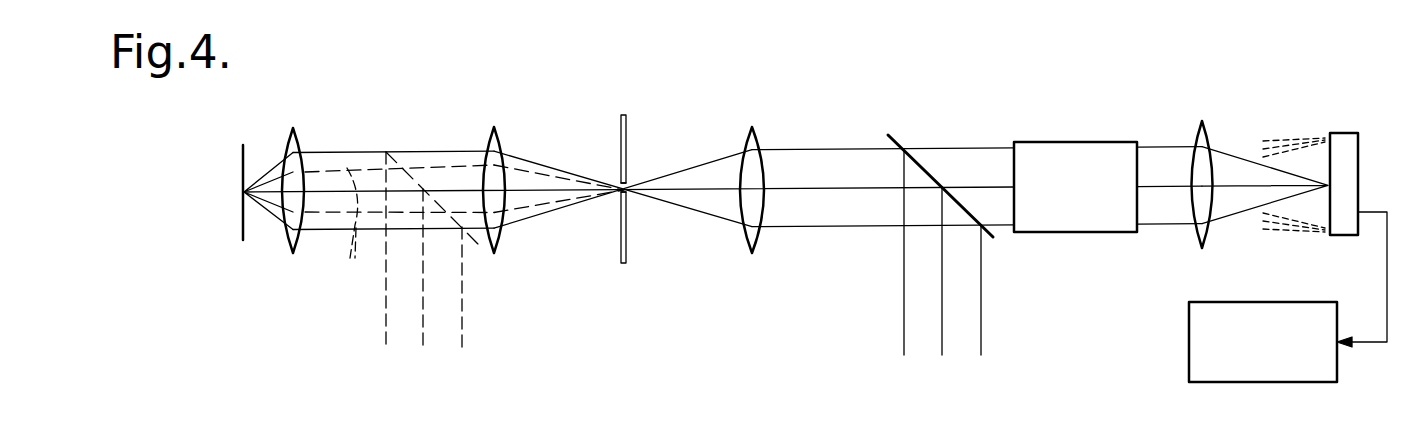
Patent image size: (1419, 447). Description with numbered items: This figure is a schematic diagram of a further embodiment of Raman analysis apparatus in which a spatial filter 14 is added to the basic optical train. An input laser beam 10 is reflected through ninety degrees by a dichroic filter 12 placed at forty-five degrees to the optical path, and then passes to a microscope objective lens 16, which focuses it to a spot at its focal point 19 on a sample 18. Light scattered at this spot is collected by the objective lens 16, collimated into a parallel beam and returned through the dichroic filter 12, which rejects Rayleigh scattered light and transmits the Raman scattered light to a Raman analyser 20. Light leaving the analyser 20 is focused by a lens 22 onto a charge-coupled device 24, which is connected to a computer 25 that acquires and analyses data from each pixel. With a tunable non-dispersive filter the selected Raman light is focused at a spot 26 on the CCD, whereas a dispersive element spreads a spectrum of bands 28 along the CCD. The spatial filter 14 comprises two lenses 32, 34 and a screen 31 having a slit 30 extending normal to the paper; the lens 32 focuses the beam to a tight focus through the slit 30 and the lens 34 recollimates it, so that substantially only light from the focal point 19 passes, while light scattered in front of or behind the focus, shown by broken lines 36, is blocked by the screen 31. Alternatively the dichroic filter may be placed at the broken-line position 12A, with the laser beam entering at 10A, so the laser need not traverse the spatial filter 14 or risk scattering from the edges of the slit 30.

The input laser beam 10 is at (970, 348).
The alternative laser beam entry position 10A is at (437, 332).
The dichroic filter 12 is at (899, 138).
The alternative dichroic filter position 12A is at (376, 142).
The spatial filter 14 is at (763, 108).
The microscope objective lens 16 is at (297, 138).
The sample 18 is at (247, 150).
The focal point 19 is at (248, 230).
The Raman analyser 20 is at (1070, 143).
The lens 22 is at (1207, 120).
The charge-coupled device (CCD) 24 is at (1347, 134).
The computer 25 is at (1195, 360).
The focused spot on CCD 26 is at (1327, 188).
The spectrum bands 28 is at (1282, 140).
The slit 30 is at (627, 192).
The screen 31 is at (618, 135).
The lens 32 is at (500, 245).
The lens 34 is at (752, 249).
The out-of-focus light rays 36 is at (355, 228).